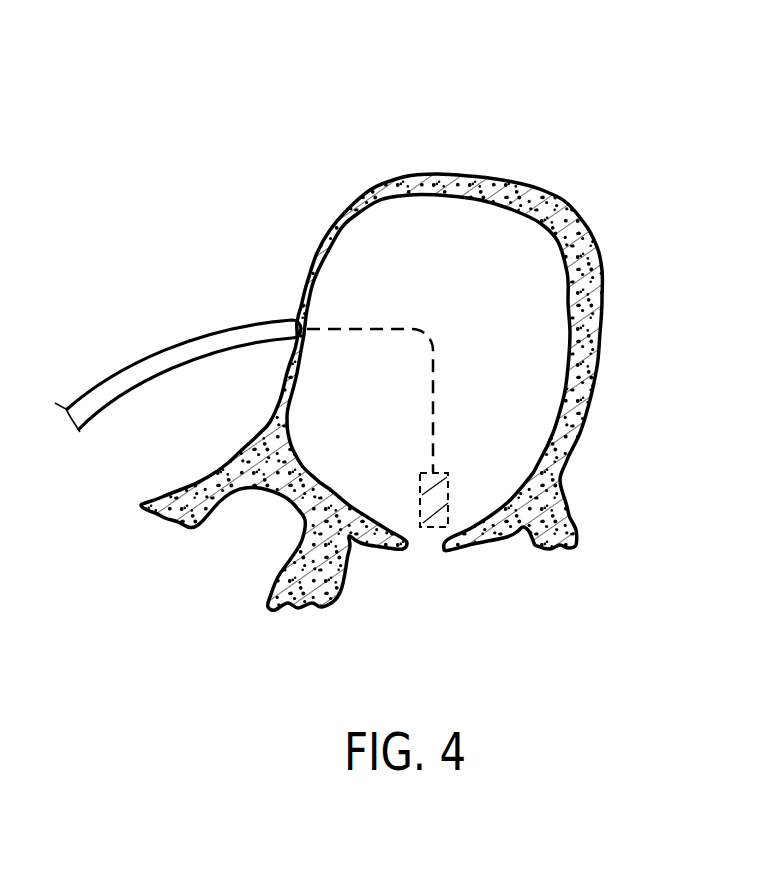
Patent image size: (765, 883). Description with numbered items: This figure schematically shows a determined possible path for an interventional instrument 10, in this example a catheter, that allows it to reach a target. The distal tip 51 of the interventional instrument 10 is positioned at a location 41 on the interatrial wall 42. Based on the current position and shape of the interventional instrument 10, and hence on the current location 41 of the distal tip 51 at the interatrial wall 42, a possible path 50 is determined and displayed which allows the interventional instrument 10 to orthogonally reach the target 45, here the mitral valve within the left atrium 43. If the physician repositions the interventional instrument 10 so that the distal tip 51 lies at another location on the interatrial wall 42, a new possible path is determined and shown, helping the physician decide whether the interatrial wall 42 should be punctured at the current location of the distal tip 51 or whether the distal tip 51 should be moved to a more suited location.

The interventional instrument 10 is at (146, 368).
The location 41 is at (286, 306).
The interatrial wall 42 is at (265, 443).
The left atrium 43 is at (449, 228).
The target 45 is at (430, 566).
The possible path 50 is at (446, 320).
The distal tip 51 is at (270, 346).